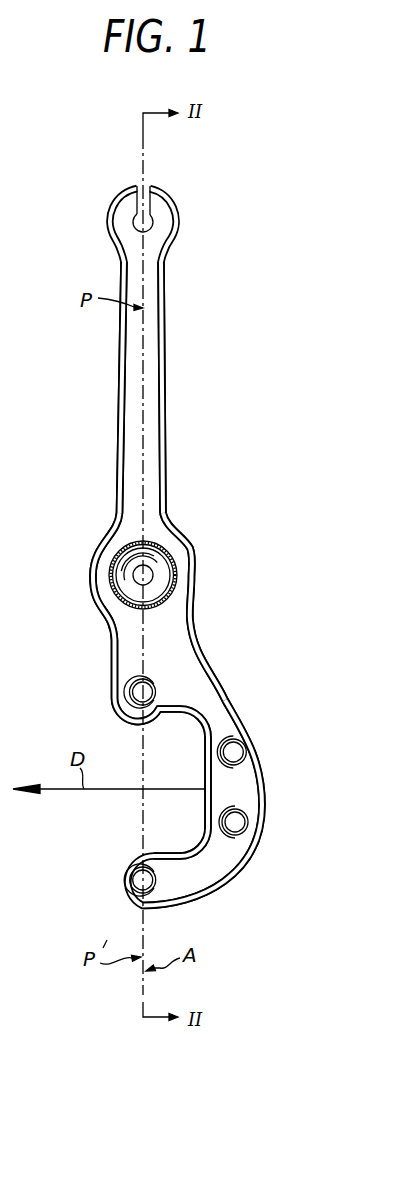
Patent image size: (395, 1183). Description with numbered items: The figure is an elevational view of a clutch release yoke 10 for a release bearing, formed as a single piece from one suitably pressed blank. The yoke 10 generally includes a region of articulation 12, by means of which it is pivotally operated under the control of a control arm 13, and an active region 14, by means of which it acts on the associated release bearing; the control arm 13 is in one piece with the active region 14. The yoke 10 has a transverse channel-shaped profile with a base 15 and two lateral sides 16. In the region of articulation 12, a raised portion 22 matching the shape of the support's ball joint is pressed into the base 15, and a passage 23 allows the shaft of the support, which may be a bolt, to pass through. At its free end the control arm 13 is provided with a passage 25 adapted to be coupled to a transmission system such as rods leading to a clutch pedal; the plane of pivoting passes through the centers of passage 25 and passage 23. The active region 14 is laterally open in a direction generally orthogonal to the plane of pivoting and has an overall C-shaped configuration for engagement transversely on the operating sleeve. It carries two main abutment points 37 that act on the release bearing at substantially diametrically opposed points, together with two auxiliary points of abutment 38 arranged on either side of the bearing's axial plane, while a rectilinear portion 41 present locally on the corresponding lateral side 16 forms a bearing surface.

The clutch release yoke 10 is at (225, 590).
The region of articulation 12 is at (196, 562).
The control arm 13 is at (166, 388).
The active region 14 is at (267, 772).
The base 15 is at (177, 654).
The lateral sides 16 is at (111, 647).
The raised portion 22 is at (120, 550).
The passage 23 is at (134, 573).
The passage 25 is at (133, 219).
The main abutment points 37 is at (129, 694).
The auxiliary points of abutment 38 is at (222, 751).
The rectilinear portion 41 is at (205, 779).